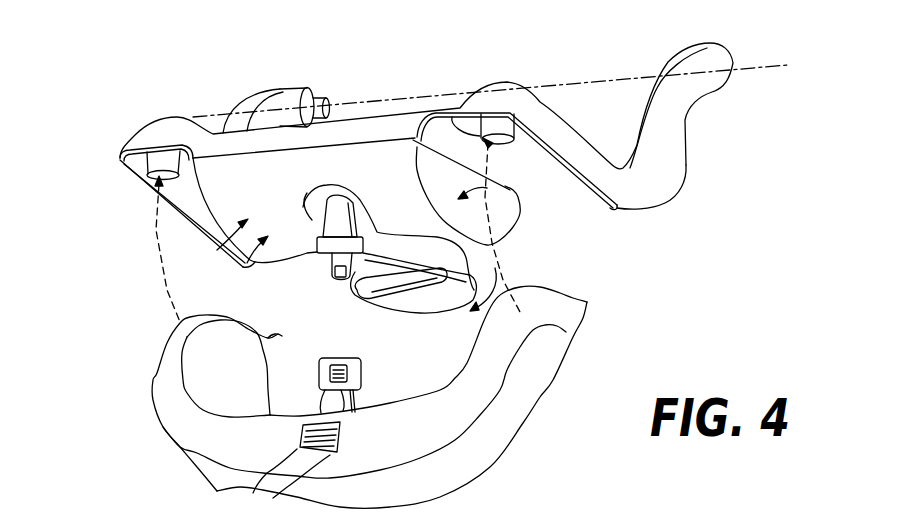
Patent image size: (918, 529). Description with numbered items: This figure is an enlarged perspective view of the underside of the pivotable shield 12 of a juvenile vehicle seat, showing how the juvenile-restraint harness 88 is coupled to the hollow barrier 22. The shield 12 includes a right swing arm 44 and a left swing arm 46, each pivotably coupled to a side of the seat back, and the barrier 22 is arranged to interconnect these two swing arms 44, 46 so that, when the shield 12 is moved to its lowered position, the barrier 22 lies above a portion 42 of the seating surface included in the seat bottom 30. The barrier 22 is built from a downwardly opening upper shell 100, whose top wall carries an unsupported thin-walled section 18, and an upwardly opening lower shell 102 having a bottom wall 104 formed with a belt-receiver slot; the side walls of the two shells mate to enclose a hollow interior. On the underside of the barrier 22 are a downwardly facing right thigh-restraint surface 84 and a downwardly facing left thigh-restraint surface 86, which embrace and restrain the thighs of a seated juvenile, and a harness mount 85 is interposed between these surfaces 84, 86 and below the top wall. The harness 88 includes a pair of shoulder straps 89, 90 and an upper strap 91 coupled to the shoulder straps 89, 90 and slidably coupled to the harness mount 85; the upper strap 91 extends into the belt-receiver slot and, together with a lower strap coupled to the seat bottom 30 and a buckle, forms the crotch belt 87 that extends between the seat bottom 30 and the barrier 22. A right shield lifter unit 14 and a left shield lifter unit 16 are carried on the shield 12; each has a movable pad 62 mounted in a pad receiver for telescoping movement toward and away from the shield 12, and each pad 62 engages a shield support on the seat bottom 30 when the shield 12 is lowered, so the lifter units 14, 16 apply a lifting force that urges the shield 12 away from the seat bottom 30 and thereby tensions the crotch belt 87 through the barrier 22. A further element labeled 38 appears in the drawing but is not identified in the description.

The pivotable shield 12 is at (561, 99).
The right shield lifter unit 14 is at (150, 182).
The left shield lifter unit 16 is at (456, 129).
The unsupported thin-walled section 18 is at (340, 103).
The hollow barrier 22 is at (178, 232).
The seat bottom 30 is at (158, 435).
The axis 38 is at (757, 70).
The portion of the seating surface 42 is at (390, 404).
The right swing arm 44 is at (248, 106).
The left swing arm 46 is at (660, 172).
The movable pad 62 is at (120, 162).
The right thigh-restraint surface 84 is at (294, 253).
The harness mount 85 is at (334, 215).
The left thigh-restraint surface 86 is at (495, 243).
The crotch belt 87 is at (297, 374).
The juvenile-restraint harness 88 is at (497, 278).
The shoulder strap 89 is at (422, 310).
The shoulder strap 90 is at (443, 306).
The upper strap 91 is at (325, 220).
The upper shell 100 is at (386, 106).
The lower shell 102 is at (510, 197).
The bottom wall 104 is at (165, 292).